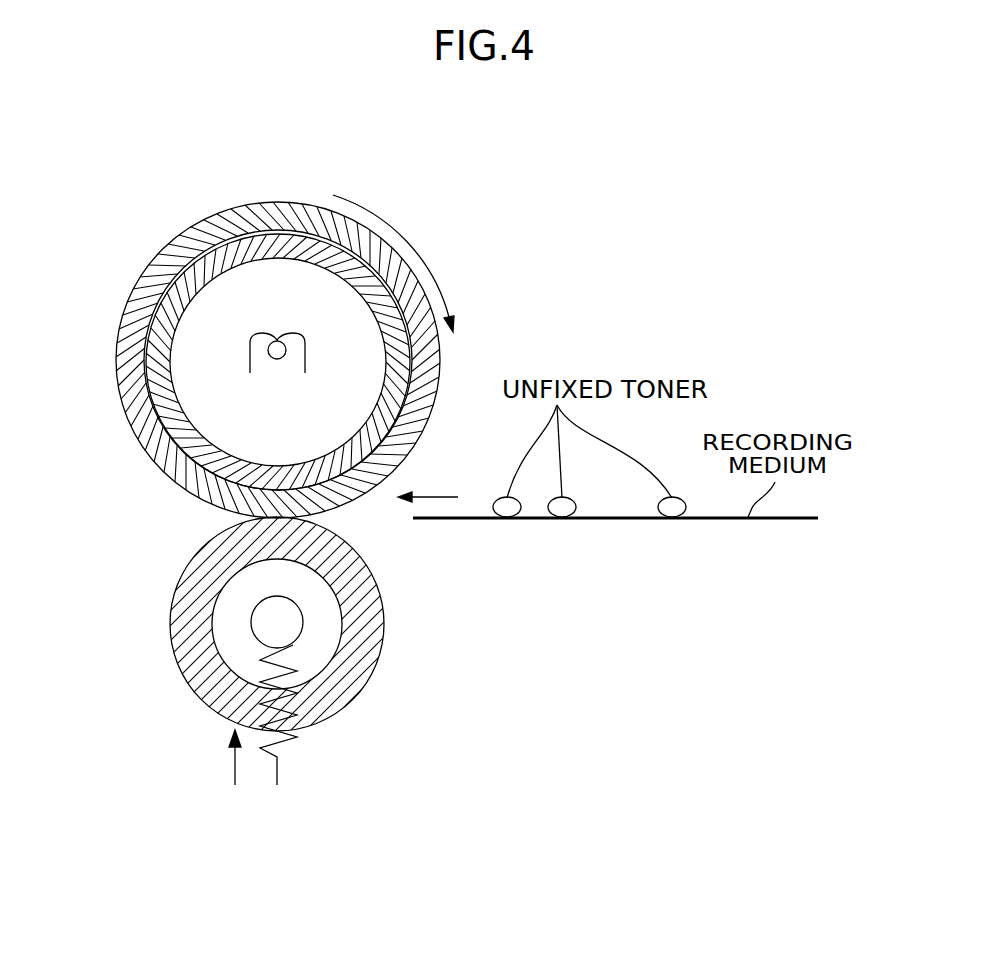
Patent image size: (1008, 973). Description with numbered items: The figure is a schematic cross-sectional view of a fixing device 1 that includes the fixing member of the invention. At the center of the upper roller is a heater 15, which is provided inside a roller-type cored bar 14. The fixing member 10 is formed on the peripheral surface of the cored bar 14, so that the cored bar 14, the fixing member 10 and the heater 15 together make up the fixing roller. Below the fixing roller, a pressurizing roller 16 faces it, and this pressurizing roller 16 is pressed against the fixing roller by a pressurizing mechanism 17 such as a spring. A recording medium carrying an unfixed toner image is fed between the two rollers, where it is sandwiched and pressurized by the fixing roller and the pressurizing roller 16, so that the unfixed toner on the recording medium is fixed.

The fixing device 1 is at (488, 298).
The fixing member 10 is at (282, 212).
The roller-type cored bar 14 is at (195, 273).
The heater 15 is at (248, 362).
The pressurizing roller 16 is at (385, 604).
The pressurizing mechanism 17 is at (290, 738).